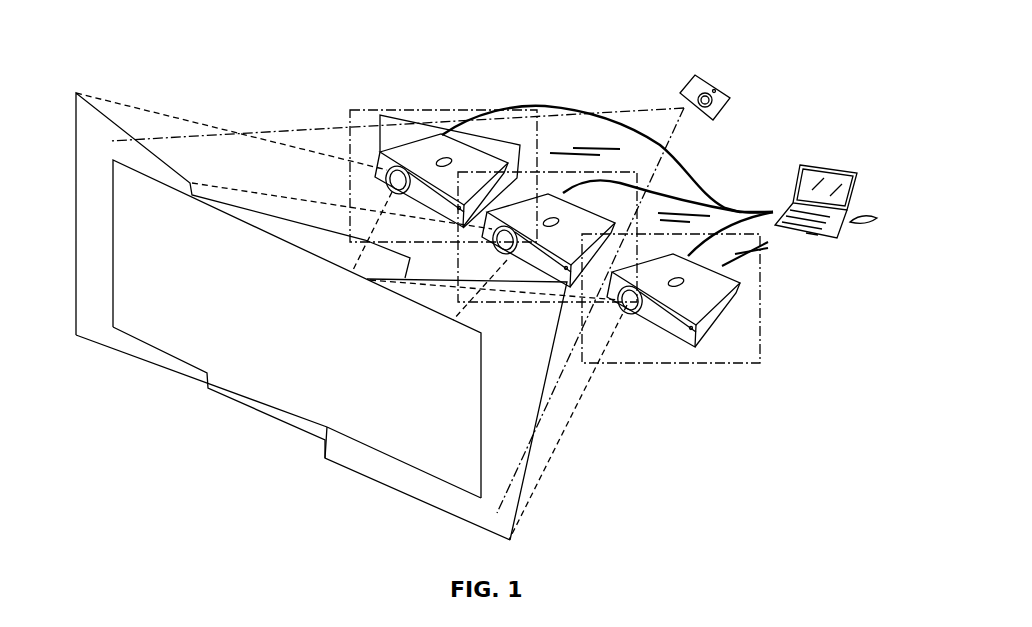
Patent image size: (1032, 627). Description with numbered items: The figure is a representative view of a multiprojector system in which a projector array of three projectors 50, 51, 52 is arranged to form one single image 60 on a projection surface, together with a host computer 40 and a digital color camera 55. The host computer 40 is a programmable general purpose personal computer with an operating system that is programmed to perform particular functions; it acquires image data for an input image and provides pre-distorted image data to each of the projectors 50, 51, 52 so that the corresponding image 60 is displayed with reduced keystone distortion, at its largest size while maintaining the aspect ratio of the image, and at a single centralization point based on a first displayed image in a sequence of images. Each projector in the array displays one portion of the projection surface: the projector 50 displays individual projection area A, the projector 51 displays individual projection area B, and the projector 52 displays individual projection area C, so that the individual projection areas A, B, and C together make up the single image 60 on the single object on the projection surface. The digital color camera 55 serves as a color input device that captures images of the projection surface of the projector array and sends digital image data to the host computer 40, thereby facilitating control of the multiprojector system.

The host computer 40 is at (858, 182).
The projector 50 is at (705, 310).
The projector 51 is at (575, 247).
The projector 52 is at (427, 166).
The digital color camera 55 is at (688, 83).
The image 60 is at (130, 315).
The individual projection area A is at (403, 480).
The individual projection area B is at (257, 403).
The individual projection area C is at (85, 327).